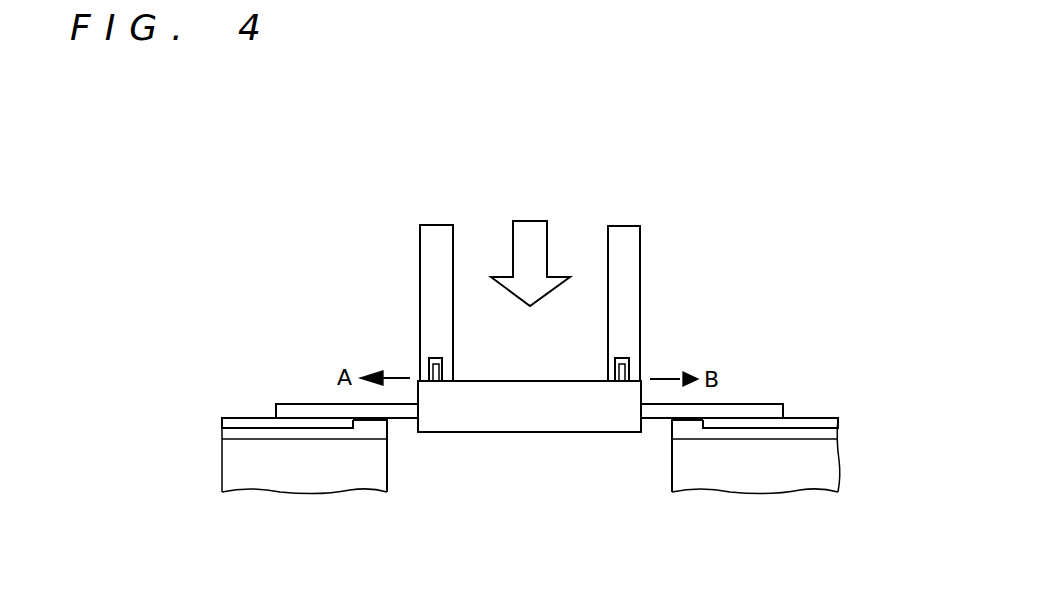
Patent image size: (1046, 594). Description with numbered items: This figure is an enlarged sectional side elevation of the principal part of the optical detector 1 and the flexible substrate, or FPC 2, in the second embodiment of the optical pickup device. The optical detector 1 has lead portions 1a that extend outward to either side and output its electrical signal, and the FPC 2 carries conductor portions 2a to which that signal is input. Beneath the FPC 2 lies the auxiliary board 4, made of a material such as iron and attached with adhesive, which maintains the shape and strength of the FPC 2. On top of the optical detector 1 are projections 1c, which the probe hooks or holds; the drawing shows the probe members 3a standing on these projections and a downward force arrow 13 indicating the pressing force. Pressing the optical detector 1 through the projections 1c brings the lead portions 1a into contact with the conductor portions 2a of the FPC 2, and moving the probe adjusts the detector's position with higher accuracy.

The optical detector 1 is at (542, 415).
The lead portion 1a is at (758, 407).
The projection 1c is at (436, 368).
The flexible substrate (FPC) 2 is at (843, 432).
The conductor portion 2a is at (815, 420).
The pressing jig 3a is at (627, 228).
The auxiliary board 4 is at (825, 467).
The pressing force arrow 13 is at (532, 228).